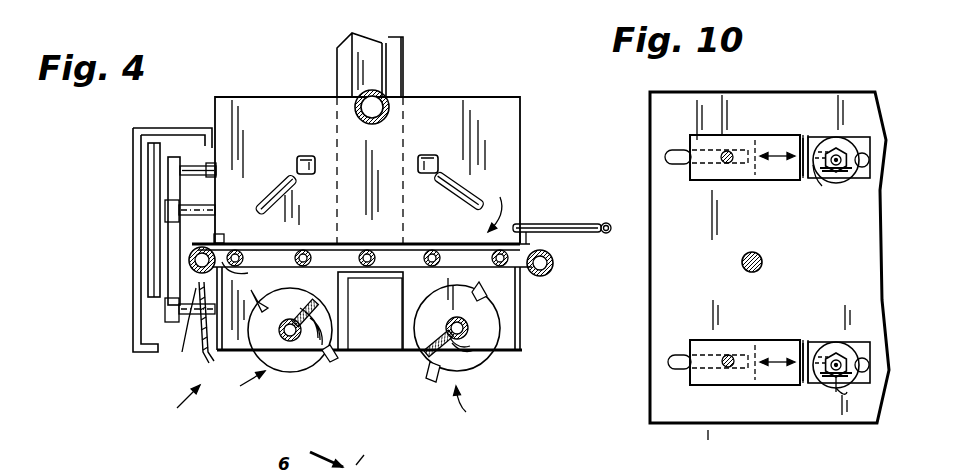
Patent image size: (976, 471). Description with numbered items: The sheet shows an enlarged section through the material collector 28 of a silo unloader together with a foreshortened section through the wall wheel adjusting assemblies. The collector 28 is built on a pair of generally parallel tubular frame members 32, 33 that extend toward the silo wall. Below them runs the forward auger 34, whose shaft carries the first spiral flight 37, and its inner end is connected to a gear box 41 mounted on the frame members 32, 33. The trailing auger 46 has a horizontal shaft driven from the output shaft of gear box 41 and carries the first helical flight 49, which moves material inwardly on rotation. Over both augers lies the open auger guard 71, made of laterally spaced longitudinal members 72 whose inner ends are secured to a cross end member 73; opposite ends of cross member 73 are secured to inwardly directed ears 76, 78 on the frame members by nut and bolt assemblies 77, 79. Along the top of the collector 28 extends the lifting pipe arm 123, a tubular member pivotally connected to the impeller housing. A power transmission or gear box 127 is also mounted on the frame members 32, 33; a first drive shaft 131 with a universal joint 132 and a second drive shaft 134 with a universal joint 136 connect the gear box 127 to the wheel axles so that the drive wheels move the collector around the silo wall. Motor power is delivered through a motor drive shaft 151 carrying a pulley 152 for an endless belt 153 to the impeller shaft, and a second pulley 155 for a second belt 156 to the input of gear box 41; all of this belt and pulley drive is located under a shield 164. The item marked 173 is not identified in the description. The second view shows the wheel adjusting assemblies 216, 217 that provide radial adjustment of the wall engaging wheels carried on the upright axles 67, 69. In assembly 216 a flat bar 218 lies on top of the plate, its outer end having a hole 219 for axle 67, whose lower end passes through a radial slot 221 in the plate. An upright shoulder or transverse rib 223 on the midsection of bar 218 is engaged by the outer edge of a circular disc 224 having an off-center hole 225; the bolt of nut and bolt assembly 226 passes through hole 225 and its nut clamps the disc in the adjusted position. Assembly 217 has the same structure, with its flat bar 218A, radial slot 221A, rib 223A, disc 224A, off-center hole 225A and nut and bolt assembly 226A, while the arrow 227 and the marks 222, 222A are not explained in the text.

In FIG. 4, the material collector 28 is at (173, 404).
In FIG. 4, the frame member 32 is at (552, 272).
In FIG. 4, the frame member 33 is at (185, 327).
In FIG. 4, the forward auger 34 is at (473, 407).
In FIG. 4, the first spiral flight 37 is at (477, 360).
In FIG. 4, the gear box 41 is at (512, 318).
In FIG. 4, the trailing auger 46 is at (242, 386).
In FIG. 4, the first helical flight 49 is at (294, 372).
In FIG. 10, the upright axle 67 is at (727, 366).
In FIG. 10, the second upright axle 69 is at (727, 151).
In FIG. 4, the open auger guard 71 is at (500, 203).
In FIG. 4, the longitudinal member 72 is at (262, 247).
In FIG. 4, the cross end member 73 is at (350, 241).
In FIG. 4, the inwardly directed ear 76 is at (492, 289).
In FIG. 4, the nut and bolt assembly 77 is at (533, 226).
In FIG. 4, the inwardly directed ear 78 is at (232, 273).
In FIG. 4, the nut and bolt assembly 79 is at (221, 236).
In FIG. 4, the lifting pipe arm 123 is at (384, 72).
In FIG. 4, the gear box 127 is at (515, 112).
In FIG. 4, the first drive shaft 131 is at (464, 184).
In FIG. 4, the universal joint 132 is at (433, 155).
In FIG. 4, the second drive shaft 134 is at (283, 150).
In FIG. 4, the universal joint 136 is at (312, 156).
In FIG. 4, the motor drive shaft 151 is at (201, 170).
In FIG. 4, the pulley 152 is at (170, 150).
In FIG. 4, the endless belt 153 is at (152, 201).
In FIG. 4, the second pulley 155 is at (185, 166).
In FIG. 4, the second belt 156 is at (163, 309).
In FIG. 4, the shield 164 is at (135, 127).
In FIG. 4, the ring 173 is at (566, 226).
In FIG. 10, the wheel adjusting assembly 216 is at (769, 372).
In FIG. 10, the wheel adjusting assembly 217 is at (777, 150).
In FIG. 10, the flat bar 218 is at (764, 340).
In FIG. 10, the flat bar 218A is at (755, 136).
In FIG. 10, the hole 219 is at (727, 356).
In FIG. 10, the radial slot 221 is at (670, 353).
In FIG. 10, the radial slot 221A is at (674, 166).
In FIG. 10, the cam 222 is at (866, 348).
In FIG. 10, the cam 222A is at (862, 168).
In FIG. 10, the transverse rib 223 is at (803, 342).
In FIG. 10, the transverse rib 223A is at (803, 137).
In FIG. 10, the circular disc 224 is at (848, 394).
In FIG. 10, the circular disc 224A is at (824, 188).
In FIG. 10, the off-center hole 225 is at (836, 352).
In FIG. 10, the off-center hole 225A is at (838, 156).
In FIG. 10, the nut and bolt assembly 226 is at (840, 396).
In FIG. 10, the nut and bolt assembly 226A is at (864, 107).
In FIG. 10, the adjustment direction 227 is at (775, 160).